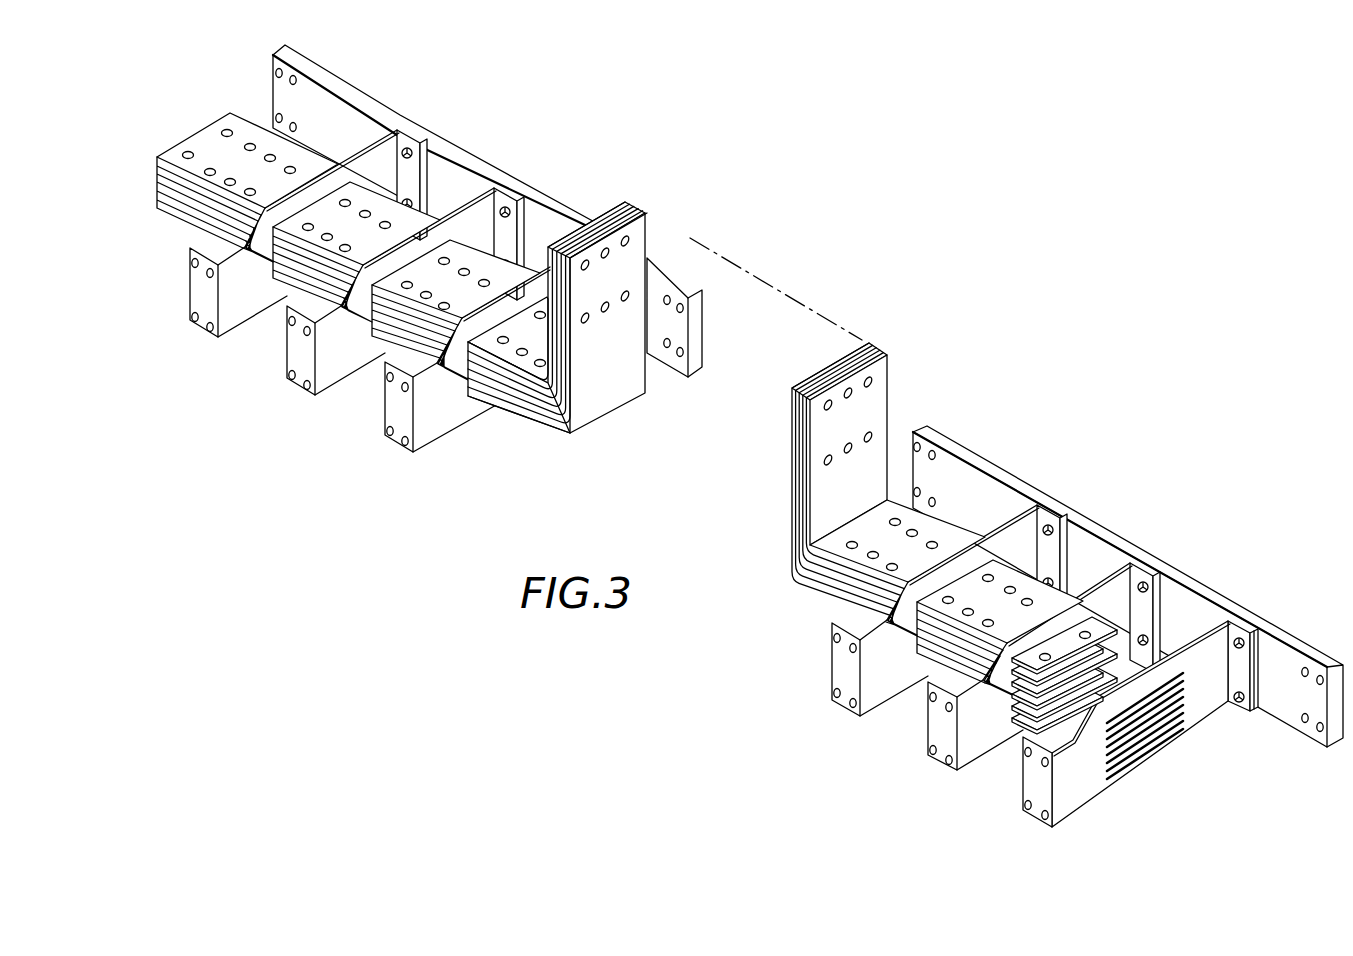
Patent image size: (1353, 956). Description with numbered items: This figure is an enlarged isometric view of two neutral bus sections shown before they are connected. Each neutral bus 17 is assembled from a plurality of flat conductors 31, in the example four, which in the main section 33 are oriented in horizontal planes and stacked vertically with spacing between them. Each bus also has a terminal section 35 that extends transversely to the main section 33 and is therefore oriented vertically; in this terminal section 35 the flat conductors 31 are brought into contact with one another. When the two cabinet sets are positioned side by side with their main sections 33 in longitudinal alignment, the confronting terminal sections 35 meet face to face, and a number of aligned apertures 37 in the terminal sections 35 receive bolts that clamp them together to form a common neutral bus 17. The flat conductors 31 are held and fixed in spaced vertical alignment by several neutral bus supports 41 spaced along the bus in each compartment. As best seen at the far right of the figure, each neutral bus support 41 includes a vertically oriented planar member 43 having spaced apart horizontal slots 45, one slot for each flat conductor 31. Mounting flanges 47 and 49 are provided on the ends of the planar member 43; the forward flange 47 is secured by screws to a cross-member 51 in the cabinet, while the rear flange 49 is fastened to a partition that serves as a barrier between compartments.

The neutral bus 17 is at (780, 513).
The flat conductors 31 is at (808, 594).
The main section 33 is at (1017, 563).
The terminal section 35 is at (648, 250).
The apertures 37 is at (605, 246).
The neutral bus support 41 is at (243, 308).
The planar member 43 is at (870, 663).
The horizontal slots 45 is at (1187, 723).
The forward mounting flange 47 is at (1254, 650).
The rear mounting flange 49 is at (1033, 768).
The cross-member 51 is at (347, 88).